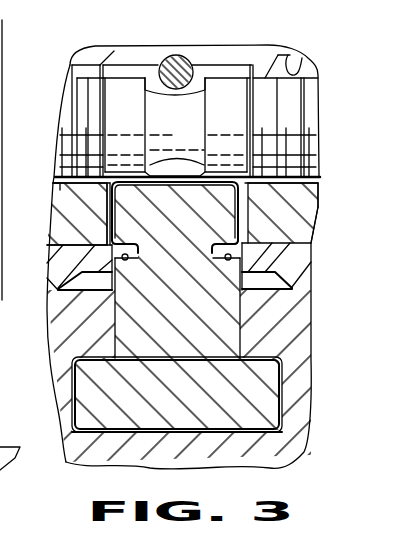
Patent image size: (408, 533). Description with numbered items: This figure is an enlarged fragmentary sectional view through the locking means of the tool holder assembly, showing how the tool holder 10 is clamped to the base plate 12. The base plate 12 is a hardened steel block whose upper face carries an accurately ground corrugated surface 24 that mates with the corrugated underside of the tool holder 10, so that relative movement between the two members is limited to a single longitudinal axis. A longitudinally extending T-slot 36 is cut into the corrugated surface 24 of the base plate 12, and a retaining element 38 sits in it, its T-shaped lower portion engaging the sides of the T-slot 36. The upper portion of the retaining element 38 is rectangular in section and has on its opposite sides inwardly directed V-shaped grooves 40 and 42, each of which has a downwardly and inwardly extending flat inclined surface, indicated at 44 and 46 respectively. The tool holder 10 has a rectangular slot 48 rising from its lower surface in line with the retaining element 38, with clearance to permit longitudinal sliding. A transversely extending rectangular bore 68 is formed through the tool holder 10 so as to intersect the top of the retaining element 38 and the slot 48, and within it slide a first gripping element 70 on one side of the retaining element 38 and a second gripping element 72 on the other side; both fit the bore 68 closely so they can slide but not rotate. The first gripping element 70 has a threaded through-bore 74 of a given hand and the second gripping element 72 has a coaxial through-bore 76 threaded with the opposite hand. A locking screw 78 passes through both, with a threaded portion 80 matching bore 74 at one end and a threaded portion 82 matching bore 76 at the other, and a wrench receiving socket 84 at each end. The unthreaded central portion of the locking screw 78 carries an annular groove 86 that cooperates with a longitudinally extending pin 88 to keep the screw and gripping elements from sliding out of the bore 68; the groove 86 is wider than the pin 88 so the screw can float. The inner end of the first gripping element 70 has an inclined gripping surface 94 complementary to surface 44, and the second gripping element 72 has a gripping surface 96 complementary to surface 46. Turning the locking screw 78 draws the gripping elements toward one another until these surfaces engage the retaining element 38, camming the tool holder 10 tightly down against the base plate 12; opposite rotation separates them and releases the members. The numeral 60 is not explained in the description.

The tool holder 10 is at (218, 63).
The base plate 12 is at (55, 350).
The corrugated surface 24 is at (0, 298).
The T-slot 36 is at (64, 460).
The retaining element 38 is at (172, 332).
The V-shaped groove 40 is at (127, 264).
The V-shaped groove 42 is at (229, 264).
The inclined surface 44 is at (110, 223).
The inclined surface 46 is at (234, 214).
The slot 48 is at (238, 255).
The edge 60 is at (311, 240).
The bore 68 is at (0, 277).
The first gripping element 70 is at (58, 198).
The second gripping element 72 is at (293, 58).
The threaded through-bore 74 is at (66, 83).
The threaded through-bore 76 is at (311, 200).
The locking screw 78 is at (123, 83).
The threaded portion 80 is at (66, 113).
The threaded portion 82 is at (273, 185).
The wrench receiving socket 84 is at (0, 233).
The annular groove 86 is at (193, 165).
The pin 88 is at (178, 56).
The gripping surface 94 is at (178, 206).
The gripping surface 96 is at (217, 220).